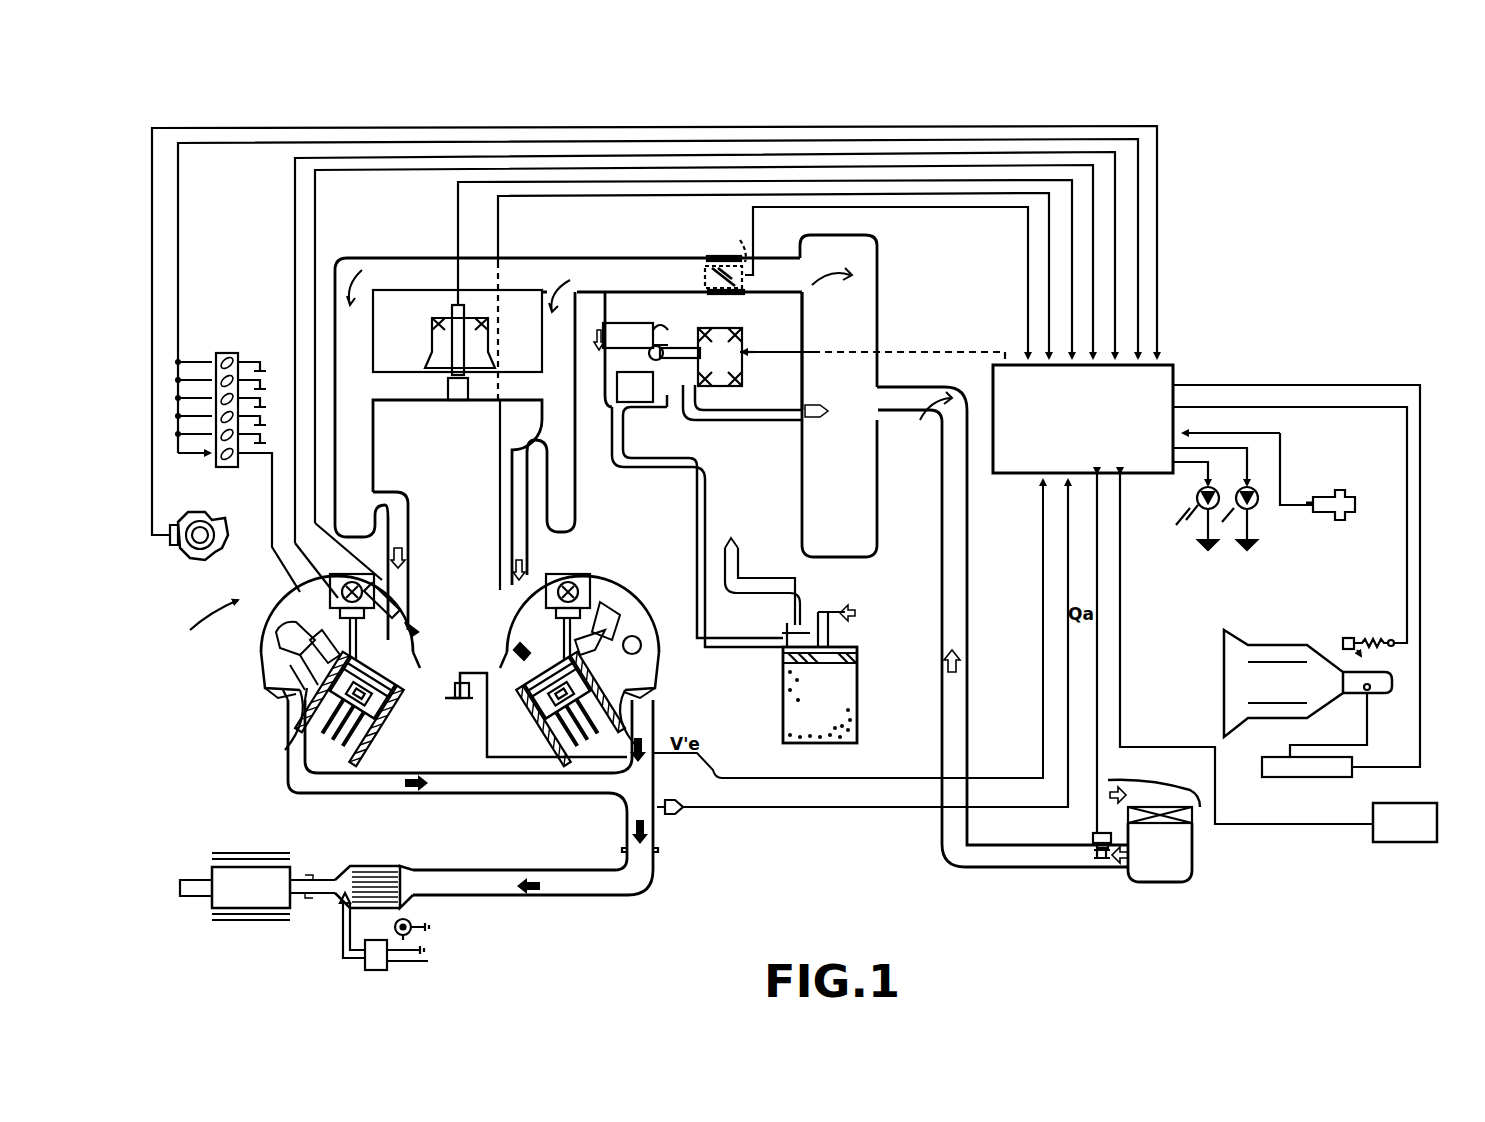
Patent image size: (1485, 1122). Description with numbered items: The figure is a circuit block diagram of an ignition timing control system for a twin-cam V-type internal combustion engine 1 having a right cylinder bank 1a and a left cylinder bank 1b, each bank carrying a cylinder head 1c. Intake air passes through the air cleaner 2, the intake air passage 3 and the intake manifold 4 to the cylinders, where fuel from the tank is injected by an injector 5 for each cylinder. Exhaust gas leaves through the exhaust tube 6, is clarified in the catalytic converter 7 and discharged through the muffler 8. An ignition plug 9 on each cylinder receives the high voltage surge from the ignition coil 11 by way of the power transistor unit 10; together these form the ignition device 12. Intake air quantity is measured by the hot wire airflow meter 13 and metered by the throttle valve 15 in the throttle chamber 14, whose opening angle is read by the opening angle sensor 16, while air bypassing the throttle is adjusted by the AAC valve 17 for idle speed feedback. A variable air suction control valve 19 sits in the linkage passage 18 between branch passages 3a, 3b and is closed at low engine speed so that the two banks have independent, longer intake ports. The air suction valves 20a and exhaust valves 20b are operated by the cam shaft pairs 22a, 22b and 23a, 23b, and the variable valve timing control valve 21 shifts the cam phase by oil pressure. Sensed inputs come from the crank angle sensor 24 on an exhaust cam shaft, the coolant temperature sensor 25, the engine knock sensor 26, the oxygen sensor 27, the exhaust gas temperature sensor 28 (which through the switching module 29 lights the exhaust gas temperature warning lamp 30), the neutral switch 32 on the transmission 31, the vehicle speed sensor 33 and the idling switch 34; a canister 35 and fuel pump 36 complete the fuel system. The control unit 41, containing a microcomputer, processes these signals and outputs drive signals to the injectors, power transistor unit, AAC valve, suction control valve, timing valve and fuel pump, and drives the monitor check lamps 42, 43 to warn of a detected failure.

The V-type internal combustion engine 1 is at (215, 712).
The right cylinder bank 1a is at (625, 598).
The left cylinder bank 1b is at (255, 640).
The cylinder head 1c is at (272, 690).
The air cleaner 2 is at (1180, 835).
The intake air passage 3 is at (968, 630).
The branch passage 3a is at (362, 263).
The branch passage 3b is at (578, 513).
The intake manifold 4 is at (535, 545).
The injector 5 is at (414, 630).
The exhaust tube 6 is at (578, 896).
The catalytic converter 7 is at (373, 866).
The muffler 8 is at (245, 866).
The ignition plug 9 is at (295, 688).
The power transistor unit 10 is at (228, 353).
The ignition coil 11 is at (300, 600).
The ignition device 12 is at (199, 622).
The airflow meter 13 is at (1093, 836).
The throttle chamber 14 is at (735, 294).
The throttle valve 15 is at (705, 258).
The opening angle sensor 16 is at (871, 282).
The AAC valve 17 is at (748, 378).
The linkage passage 18 is at (432, 404).
The variable air suction control valve 19 is at (420, 340).
The air suction valve 20a is at (522, 655).
The exhaust valve 20b is at (305, 710).
The variable valve timing control valve 21 is at (350, 582).
The cam shaft 22a is at (576, 582).
The cam shaft 22b is at (645, 642).
The cam shaft 23a is at (262, 662).
The cam shaft 23b is at (392, 596).
The crank angle sensor 24 is at (190, 550).
The coolant temperature sensor 25 is at (516, 655).
The engine knock sensor 26 is at (462, 683).
The oxygen sensor 27 is at (675, 815).
The exhaust gas temperature sensor 28 is at (340, 905).
The switching module 29 is at (375, 970).
The exhaust gas temperature warning lamp 30 is at (413, 925).
The transmission 31 is at (1272, 646).
The neutral switch 32 is at (1345, 638).
The vehicle speed sensor 33 is at (1308, 778).
The idling switch 34 is at (1418, 835).
The canister 35 is at (858, 692).
The fuel pump 36 is at (1333, 490).
The control unit 41 is at (1178, 365).
The monitor check lamp 42 is at (1214, 487).
The monitor check lamp 43 is at (1257, 505).